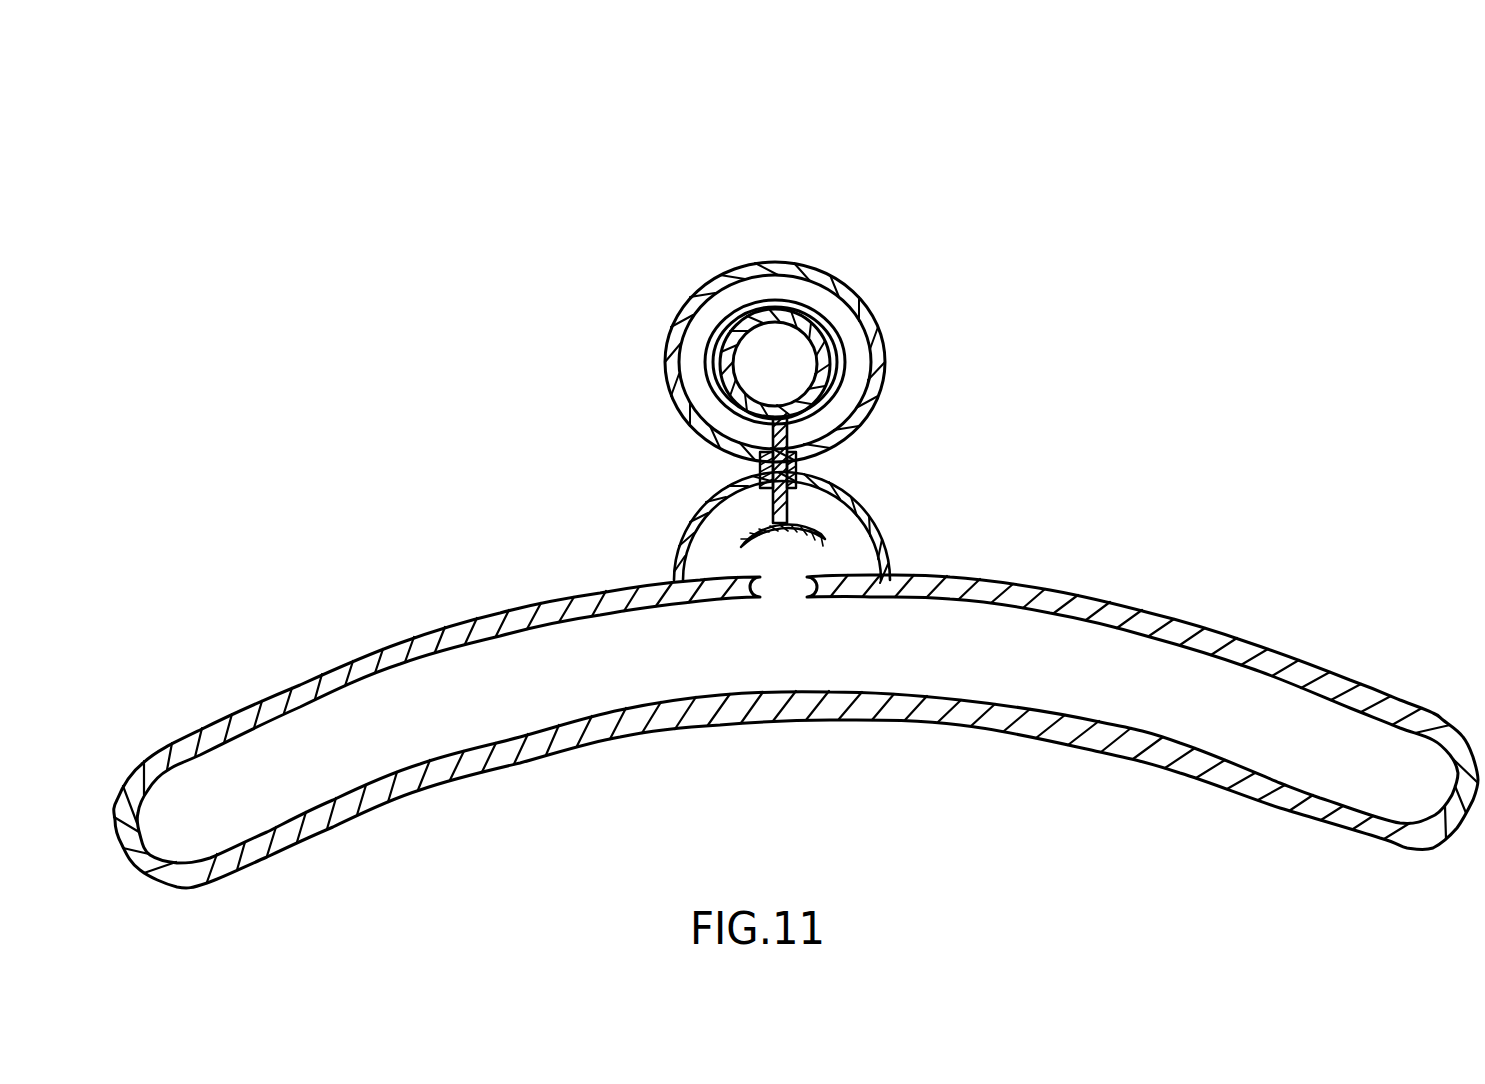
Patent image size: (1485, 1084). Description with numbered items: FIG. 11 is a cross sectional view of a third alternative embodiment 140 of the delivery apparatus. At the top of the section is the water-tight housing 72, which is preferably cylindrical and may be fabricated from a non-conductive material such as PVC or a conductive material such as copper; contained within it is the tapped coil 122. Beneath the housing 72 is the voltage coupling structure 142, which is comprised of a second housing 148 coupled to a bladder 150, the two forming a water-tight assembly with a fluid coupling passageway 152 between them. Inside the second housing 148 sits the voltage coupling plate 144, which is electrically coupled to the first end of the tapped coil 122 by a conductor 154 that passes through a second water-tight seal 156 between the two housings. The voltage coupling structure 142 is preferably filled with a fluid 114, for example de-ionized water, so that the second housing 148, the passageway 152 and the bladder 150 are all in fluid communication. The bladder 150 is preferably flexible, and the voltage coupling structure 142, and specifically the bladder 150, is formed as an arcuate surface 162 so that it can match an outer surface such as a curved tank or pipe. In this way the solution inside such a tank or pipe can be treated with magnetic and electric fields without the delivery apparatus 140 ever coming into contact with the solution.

The third alternative embodiment of delivery apparatus 140 is at (1077, 143).
The voltage coupling structure 142 is at (477, 557).
The fluid 114 is at (1100, 700).
The bladder 150 is at (1267, 647).
The arcuate surface 162 is at (407, 797).
The fluid coupling passageway 152 is at (785, 598).
The second housing 148 is at (862, 490).
The voltage coupling plate 144 is at (737, 540).
The conductor 154 is at (712, 445).
The second water-tight seal 156 is at (757, 466).
The water-tight housing 72 is at (770, 262).
The tapped coil 122 is at (815, 328).